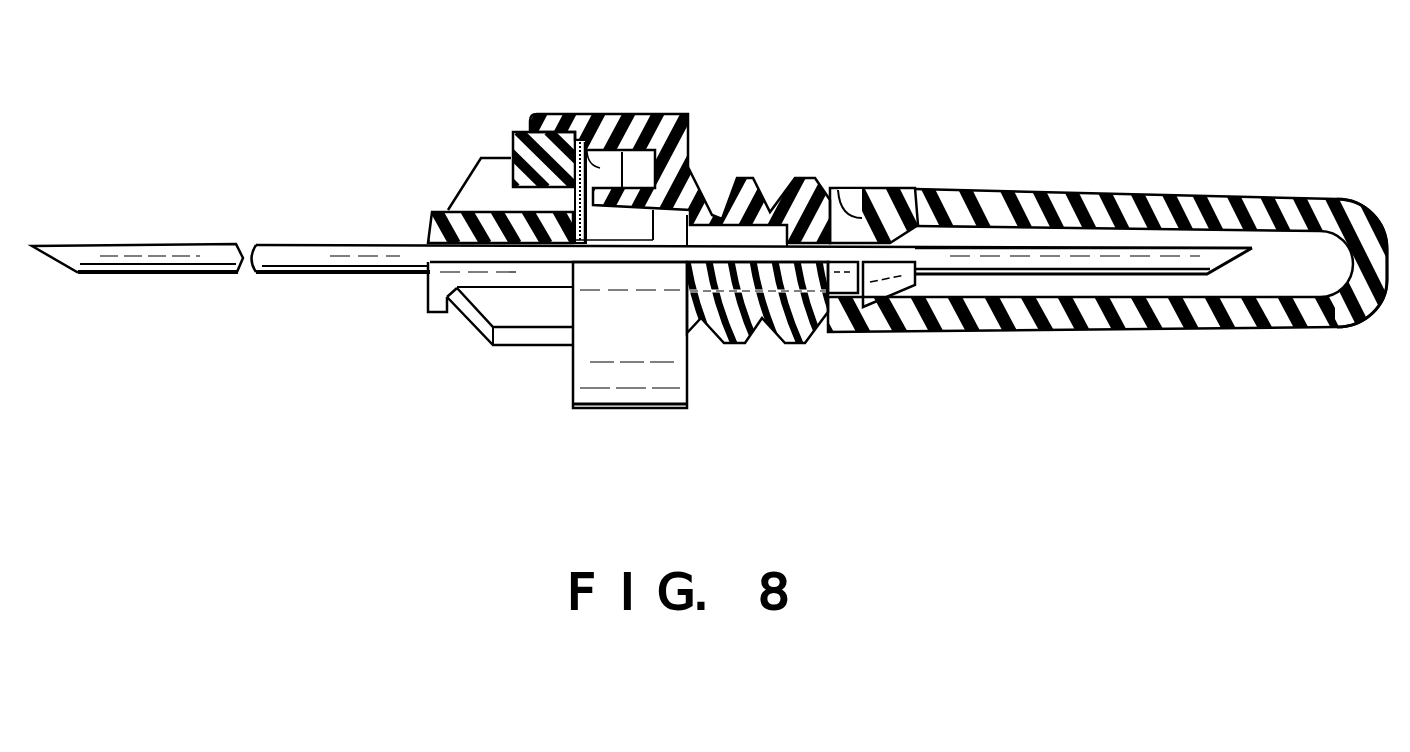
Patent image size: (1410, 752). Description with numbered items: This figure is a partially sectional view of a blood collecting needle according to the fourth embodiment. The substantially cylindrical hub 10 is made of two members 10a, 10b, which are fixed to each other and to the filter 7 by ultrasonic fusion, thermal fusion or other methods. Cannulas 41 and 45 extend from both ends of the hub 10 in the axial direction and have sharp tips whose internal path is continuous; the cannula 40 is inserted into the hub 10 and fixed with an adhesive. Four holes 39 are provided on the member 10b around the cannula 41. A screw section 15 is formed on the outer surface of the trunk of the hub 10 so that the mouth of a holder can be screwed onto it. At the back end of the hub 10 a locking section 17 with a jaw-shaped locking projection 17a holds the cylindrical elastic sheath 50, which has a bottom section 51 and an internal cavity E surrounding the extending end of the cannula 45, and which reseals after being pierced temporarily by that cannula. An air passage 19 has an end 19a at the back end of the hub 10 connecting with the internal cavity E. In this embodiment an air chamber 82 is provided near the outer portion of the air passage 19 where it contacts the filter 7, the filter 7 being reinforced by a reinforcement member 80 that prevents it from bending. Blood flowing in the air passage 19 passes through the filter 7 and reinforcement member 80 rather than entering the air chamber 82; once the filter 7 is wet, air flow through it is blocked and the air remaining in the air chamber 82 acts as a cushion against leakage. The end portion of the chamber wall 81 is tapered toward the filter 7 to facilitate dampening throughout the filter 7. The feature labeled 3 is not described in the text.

The cannula 41 is at (135, 252).
The cannula 40 is at (315, 253).
The needle hub 3 is at (451, 210).
The holes 39 is at (518, 198).
The filter 7 is at (574, 145).
The reinforcement member 80 is at (600, 148).
The chamber wall 81 is at (620, 187).
The air chamber 82 is at (640, 167).
The member 10a is at (713, 167).
The air passage 19 is at (763, 238).
The locking projection 17a is at (838, 192).
The locking section 17 is at (897, 240).
The end of air passage 19a is at (943, 200).
The internal cavity E is at (1080, 237).
The cannula 45 is at (1158, 260).
The elastic sheath 50 is at (1235, 193).
The bottom section 51 is at (1335, 199).
The screw section 15 is at (745, 345).
The hub 10 is at (618, 420).
The member 10b is at (462, 333).